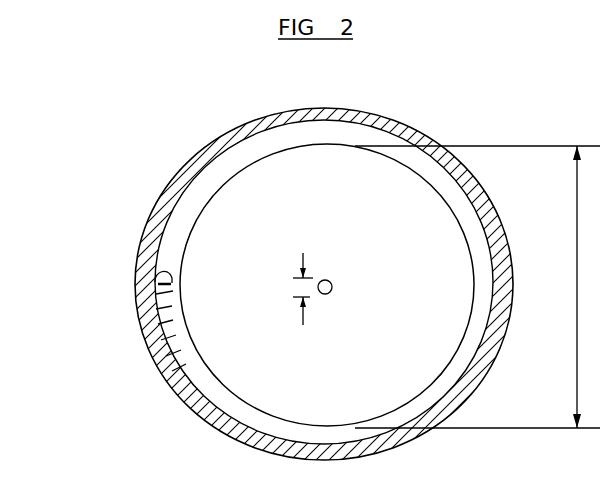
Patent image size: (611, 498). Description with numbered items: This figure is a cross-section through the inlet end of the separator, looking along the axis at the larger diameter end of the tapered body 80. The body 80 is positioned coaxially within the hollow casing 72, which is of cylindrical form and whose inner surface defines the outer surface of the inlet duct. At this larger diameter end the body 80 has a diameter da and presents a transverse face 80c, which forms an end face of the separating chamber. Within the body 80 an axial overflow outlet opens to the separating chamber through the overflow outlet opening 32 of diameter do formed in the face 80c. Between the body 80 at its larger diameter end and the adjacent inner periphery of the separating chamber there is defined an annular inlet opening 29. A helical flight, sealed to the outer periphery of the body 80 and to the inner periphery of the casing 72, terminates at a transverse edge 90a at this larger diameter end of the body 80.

The tapered body 80 is at (323, 165).
The transverse face 80c is at (420, 370).
The hollow casing 72 is at (497, 350).
The annular inlet opening 29 is at (173, 255).
The transverse edge 90a is at (137, 281).
The overflow outlet opening 32 is at (324, 280).
The diameter of larger end of body portion da is at (477, 287).
The diameter of overflow outlet opening do is at (309, 292).